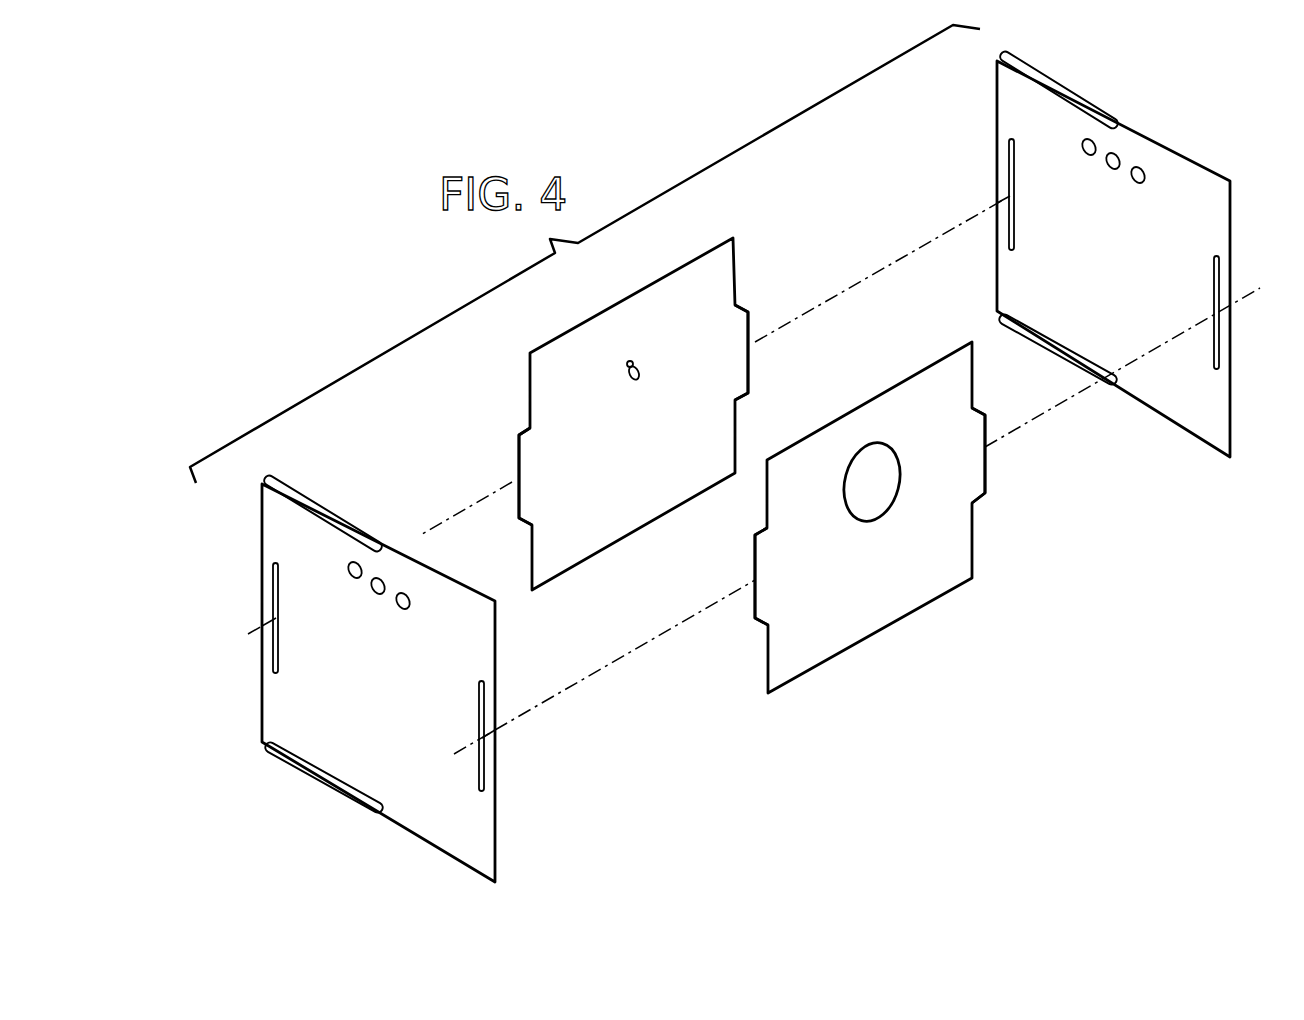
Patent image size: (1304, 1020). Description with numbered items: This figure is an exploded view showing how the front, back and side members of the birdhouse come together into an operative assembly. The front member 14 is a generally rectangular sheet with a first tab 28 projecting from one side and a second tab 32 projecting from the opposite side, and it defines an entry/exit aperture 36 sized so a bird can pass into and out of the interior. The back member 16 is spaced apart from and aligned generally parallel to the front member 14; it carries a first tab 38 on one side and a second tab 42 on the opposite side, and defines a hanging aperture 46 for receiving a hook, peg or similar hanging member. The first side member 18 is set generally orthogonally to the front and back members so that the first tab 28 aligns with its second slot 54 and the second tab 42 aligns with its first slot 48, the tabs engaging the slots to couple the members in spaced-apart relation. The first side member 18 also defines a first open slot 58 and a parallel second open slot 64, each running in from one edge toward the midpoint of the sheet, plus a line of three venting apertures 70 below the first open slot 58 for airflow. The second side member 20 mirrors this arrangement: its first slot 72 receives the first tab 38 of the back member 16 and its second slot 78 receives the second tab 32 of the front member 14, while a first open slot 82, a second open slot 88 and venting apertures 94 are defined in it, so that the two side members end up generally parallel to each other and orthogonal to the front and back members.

The front member 14 is at (846, 670).
The back member 16 is at (595, 302).
The first side member 18 is at (328, 809).
The second side member 20 is at (1198, 460).
The first tab 28 is at (760, 613).
The second tab 32 is at (978, 488).
The entry/exit aperture 36 is at (868, 455).
The first tab 38 is at (746, 318).
The second tab 42 is at (521, 437).
The hanging aperture 46 is at (636, 366).
The first slot 48 is at (271, 580).
The second slot 54 is at (487, 768).
The first open slot 58 is at (268, 481).
The second open slot 64 is at (265, 741).
The venting apertures 70 is at (402, 594).
The first slot 72 is at (1008, 160).
The second slot 78 is at (1221, 350).
The first open slot 82 is at (1012, 61).
The second open slot 88 is at (999, 315).
The venting apertures 94 is at (1138, 167).